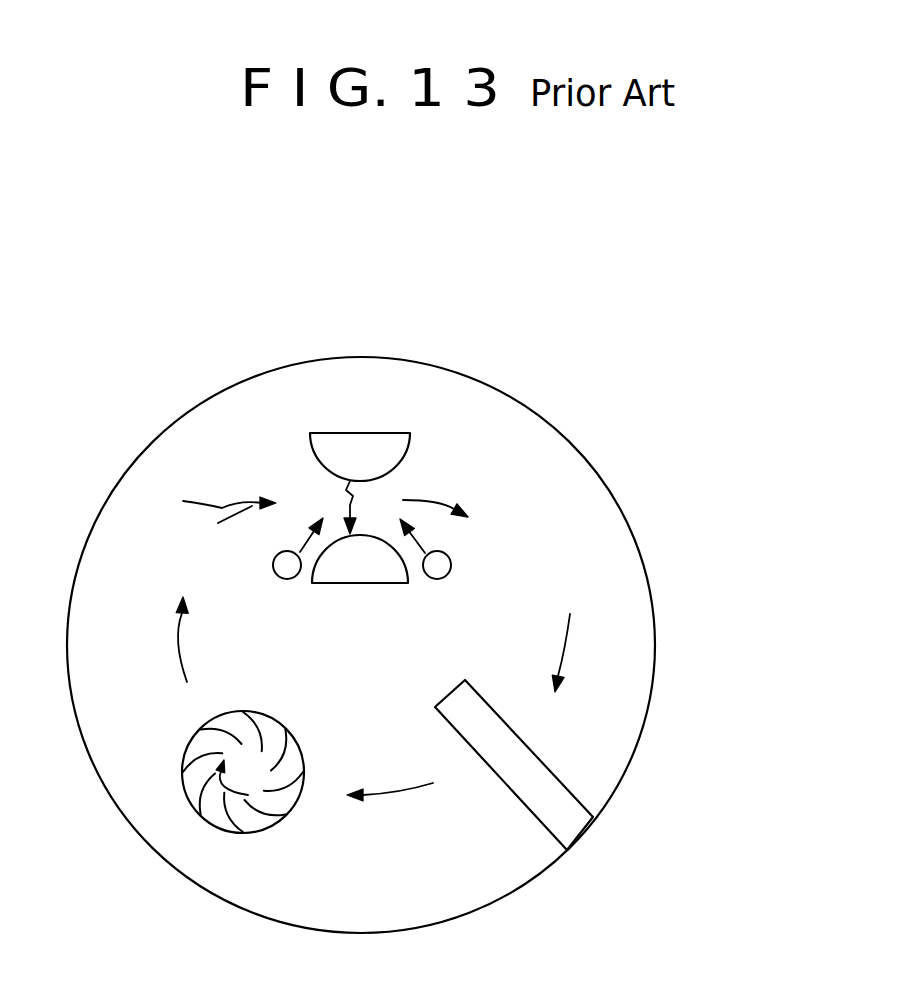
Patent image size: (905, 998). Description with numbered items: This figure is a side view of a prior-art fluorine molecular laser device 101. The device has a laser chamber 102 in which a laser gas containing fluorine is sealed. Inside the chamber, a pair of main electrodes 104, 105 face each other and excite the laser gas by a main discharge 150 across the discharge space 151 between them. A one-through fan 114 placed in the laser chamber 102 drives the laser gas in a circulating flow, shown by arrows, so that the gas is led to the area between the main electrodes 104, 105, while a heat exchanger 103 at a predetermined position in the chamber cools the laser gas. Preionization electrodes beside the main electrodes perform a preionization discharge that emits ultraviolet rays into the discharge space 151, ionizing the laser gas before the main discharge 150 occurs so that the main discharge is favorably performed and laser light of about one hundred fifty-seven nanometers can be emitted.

The fluorine molecular laser device 101 is at (690, 450).
The laser chamber 102 is at (550, 423).
The heat exchanger 103 is at (563, 790).
The main electrode 104 is at (378, 586).
The main electrode 105 is at (347, 432).
The one-through fan 114 is at (183, 788).
The main discharge 150 is at (343, 503).
The discharge space 151 is at (368, 503).